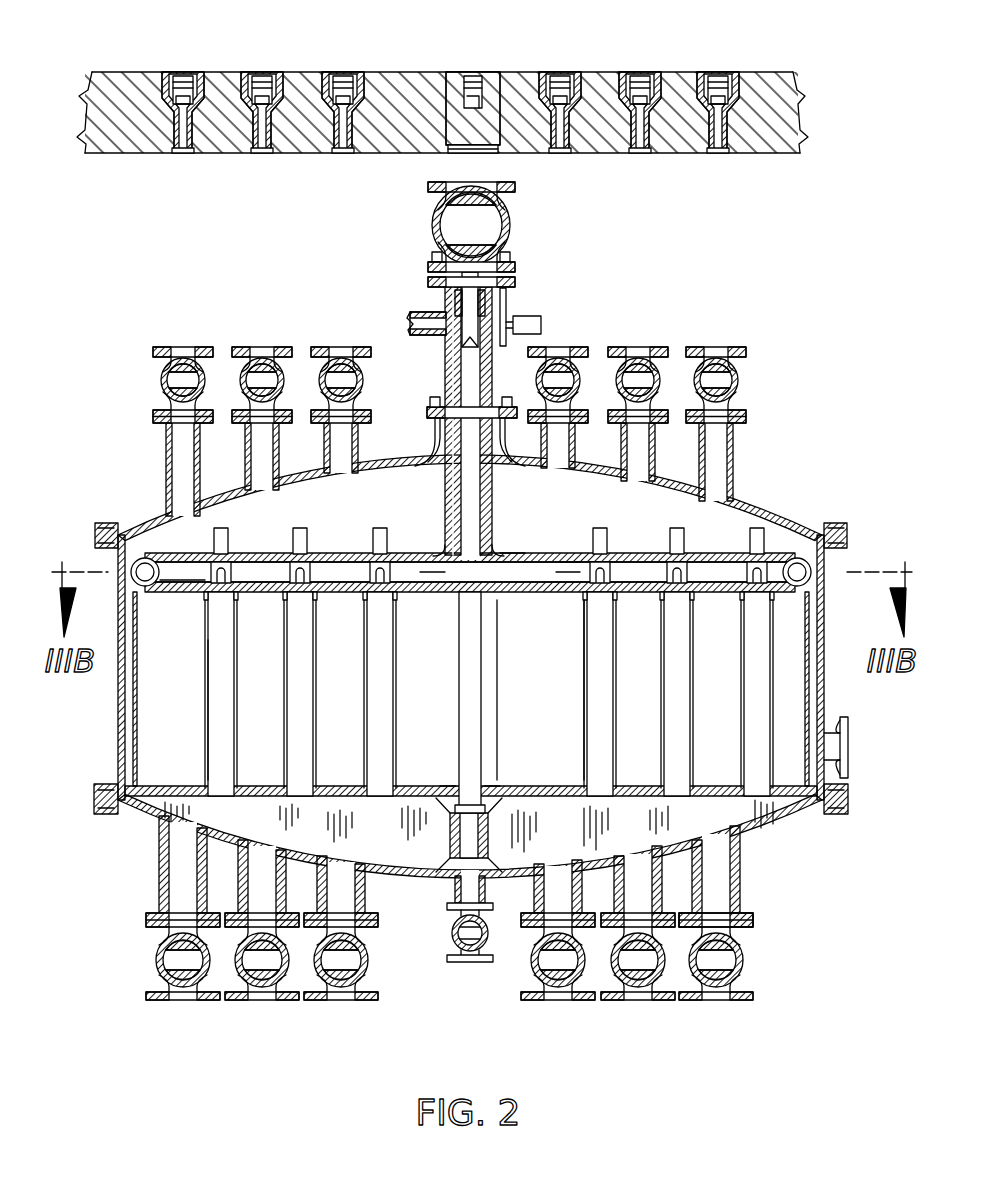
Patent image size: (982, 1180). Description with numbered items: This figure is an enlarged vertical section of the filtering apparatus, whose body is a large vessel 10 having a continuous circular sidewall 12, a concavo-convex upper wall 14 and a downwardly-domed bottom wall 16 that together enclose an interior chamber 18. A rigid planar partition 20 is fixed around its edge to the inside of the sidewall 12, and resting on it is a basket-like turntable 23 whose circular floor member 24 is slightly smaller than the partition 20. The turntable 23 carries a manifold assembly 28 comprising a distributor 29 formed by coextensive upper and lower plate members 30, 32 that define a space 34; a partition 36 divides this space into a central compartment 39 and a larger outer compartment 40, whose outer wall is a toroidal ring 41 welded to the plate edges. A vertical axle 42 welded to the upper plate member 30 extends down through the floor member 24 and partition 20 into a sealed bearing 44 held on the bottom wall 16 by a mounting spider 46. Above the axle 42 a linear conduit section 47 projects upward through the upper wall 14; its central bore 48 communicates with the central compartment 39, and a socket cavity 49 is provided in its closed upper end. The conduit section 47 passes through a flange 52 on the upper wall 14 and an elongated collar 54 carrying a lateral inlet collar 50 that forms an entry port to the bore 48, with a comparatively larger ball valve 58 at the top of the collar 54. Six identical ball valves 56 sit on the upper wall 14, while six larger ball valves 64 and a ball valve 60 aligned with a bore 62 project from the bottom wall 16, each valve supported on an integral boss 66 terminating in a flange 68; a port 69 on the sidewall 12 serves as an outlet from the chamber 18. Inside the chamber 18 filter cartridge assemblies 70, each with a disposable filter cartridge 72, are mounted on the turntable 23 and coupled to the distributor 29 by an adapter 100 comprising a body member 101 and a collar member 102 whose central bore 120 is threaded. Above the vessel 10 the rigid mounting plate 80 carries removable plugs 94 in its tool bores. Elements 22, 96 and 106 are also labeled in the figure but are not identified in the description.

The vessel 10 is at (458, 662).
The circular sidewall 12 is at (114, 740).
The upper wall 14 is at (800, 520).
The bottom wall 16 is at (762, 836).
The interior chamber 18 is at (509, 719).
The partition 20 is at (395, 800).
The electrolyte region 22 is at (566, 636).
The turntable 23 is at (514, 549).
The floor member 24 is at (446, 785).
The manifold assembly 28 is at (495, 567).
The distributor 29 is at (337, 598).
The upper plate member 30 is at (440, 597).
The lower plate member 32 is at (572, 555).
The space 34 is at (614, 584).
The partition 36 is at (505, 592).
The central compartment 39 is at (432, 577).
The outer compartment 40 is at (563, 581).
The toroidal ring 41 is at (826, 572).
The vertical axle 42 is at (460, 705).
The bearing 44 is at (490, 832).
The mounting spider 46 is at (490, 858).
The linear conduit section 47 is at (444, 497).
The central bore 48 is at (474, 515).
The socket cavity 49 is at (505, 300).
The inlet collar 50 is at (428, 312).
The flange 52 is at (440, 450).
The elongated collar 54 is at (444, 362).
The ball valves 56 is at (160, 386).
The ball valve 58 is at (430, 236).
The ball valve 60 is at (453, 940).
The bore 62 is at (455, 904).
The ball valves 64 is at (154, 963).
The boss 66 is at (164, 482).
The flange 68 is at (748, 912).
The port 69 is at (846, 735).
The filter cartridge assemblies 70 is at (204, 683).
The disposable filter cartridge 72 is at (217, 728).
The rigid mounting plate 80 is at (442, 117).
The plugs 94 is at (456, 80).
The center socket 96 is at (478, 80).
The adapter 100 is at (236, 572).
The body member 101 is at (188, 570).
The collar member 102 is at (229, 537).
The fitting 106 is at (690, 584).
The central bore 120 is at (204, 602).